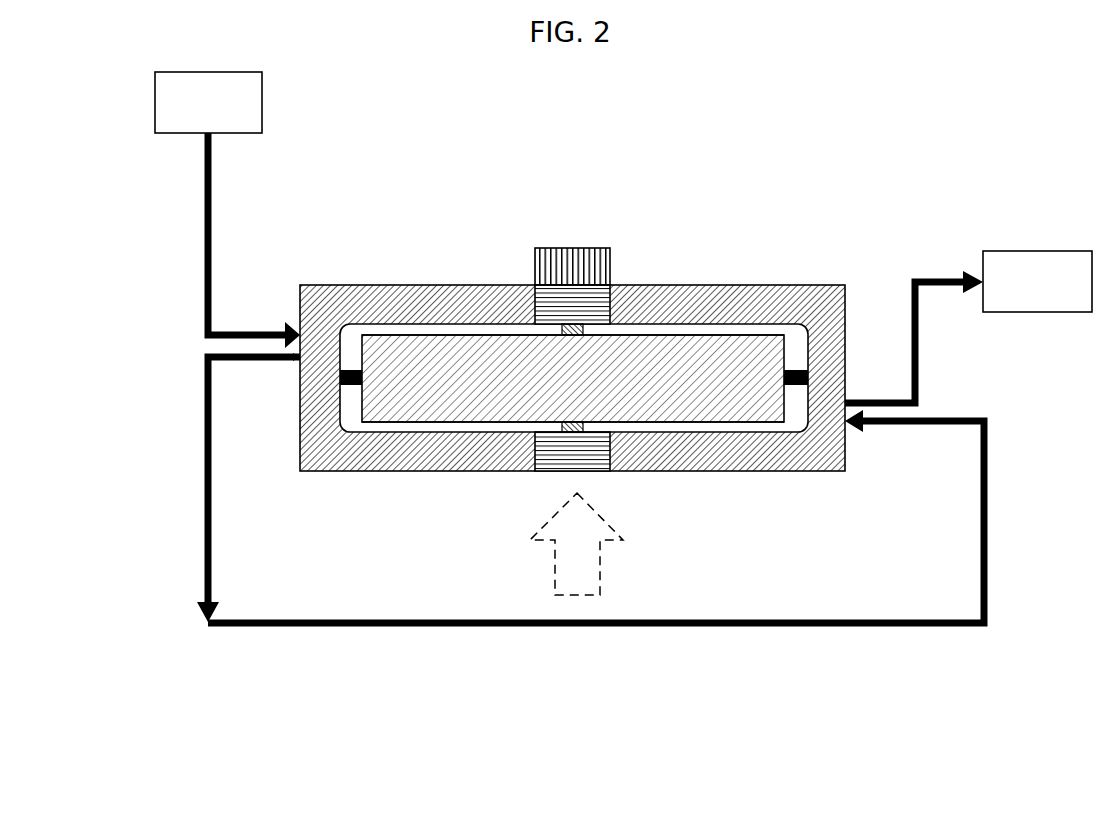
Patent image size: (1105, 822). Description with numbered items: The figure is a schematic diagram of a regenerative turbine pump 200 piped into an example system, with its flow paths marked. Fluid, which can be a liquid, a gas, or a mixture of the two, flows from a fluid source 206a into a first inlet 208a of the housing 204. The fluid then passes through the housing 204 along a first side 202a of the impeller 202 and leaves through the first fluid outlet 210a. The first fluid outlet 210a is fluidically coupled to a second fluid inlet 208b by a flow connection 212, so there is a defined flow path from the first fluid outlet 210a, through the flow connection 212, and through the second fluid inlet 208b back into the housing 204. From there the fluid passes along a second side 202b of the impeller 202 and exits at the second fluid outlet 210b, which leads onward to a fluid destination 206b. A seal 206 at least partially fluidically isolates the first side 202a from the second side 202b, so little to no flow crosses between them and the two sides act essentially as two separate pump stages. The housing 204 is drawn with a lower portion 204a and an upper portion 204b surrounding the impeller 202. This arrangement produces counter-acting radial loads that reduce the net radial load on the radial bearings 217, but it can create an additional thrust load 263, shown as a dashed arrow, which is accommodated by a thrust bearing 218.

The regenerative turbine pump 200 is at (645, 200).
The impeller 202 is at (597, 397).
The first side of impeller 202a is at (472, 335).
The second side of impeller 202b is at (678, 473).
The housing 204 is at (297, 370).
The lower portion of housing 204a is at (297, 447).
The upper portion of housing 204b is at (847, 300).
The seal 206 is at (370, 473).
The fluid source 206a is at (240, 122).
The fluid outlet 206b is at (1006, 300).
The first inlet 208a is at (293, 333).
The second fluid inlet 208b is at (850, 427).
The first fluid outlet 210a is at (297, 357).
The second fluid outlet 210b is at (853, 398).
The flow connection 212 is at (562, 626).
The radial bearings 217 is at (628, 285).
The thrust bearing 218 is at (533, 262).
The thrust load 263 is at (622, 542).